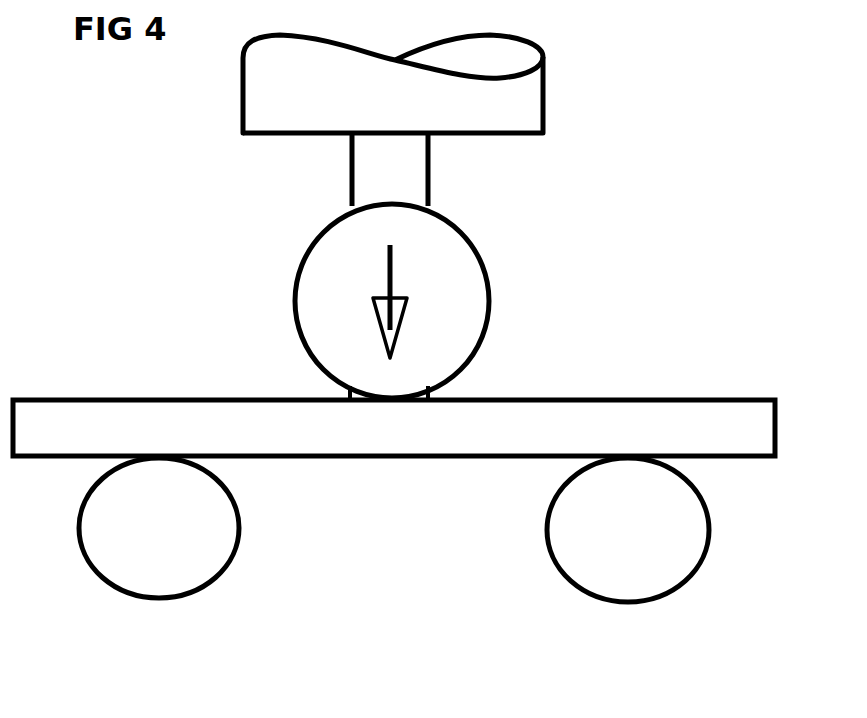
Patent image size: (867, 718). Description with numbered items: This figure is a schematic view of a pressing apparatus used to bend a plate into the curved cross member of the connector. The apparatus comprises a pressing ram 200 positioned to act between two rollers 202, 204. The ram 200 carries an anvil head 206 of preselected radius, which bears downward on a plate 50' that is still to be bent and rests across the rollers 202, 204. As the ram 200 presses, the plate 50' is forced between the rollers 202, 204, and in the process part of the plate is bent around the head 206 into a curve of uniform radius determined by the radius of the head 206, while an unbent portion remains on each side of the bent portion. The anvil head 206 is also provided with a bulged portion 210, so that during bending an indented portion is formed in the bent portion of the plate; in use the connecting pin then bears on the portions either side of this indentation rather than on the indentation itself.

The pressing ram 200 is at (547, 90).
The anvil head 206 is at (465, 267).
The bulged portion 210 is at (397, 388).
The plate still to be bent 50' is at (394, 404).
The roller 202 is at (197, 535).
The roller 204 is at (672, 527).